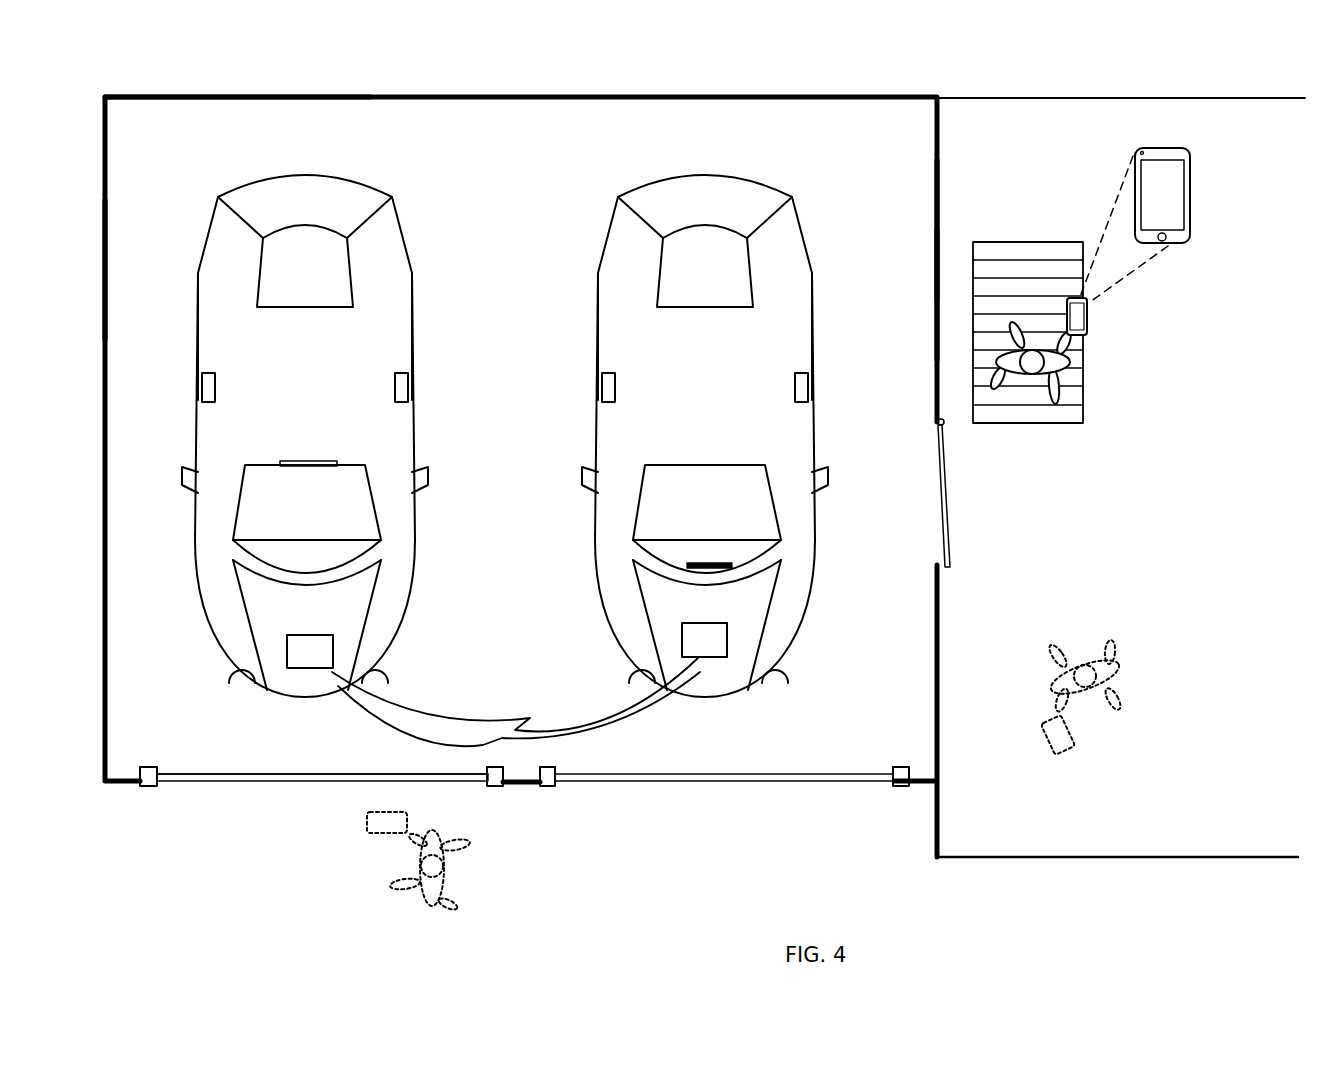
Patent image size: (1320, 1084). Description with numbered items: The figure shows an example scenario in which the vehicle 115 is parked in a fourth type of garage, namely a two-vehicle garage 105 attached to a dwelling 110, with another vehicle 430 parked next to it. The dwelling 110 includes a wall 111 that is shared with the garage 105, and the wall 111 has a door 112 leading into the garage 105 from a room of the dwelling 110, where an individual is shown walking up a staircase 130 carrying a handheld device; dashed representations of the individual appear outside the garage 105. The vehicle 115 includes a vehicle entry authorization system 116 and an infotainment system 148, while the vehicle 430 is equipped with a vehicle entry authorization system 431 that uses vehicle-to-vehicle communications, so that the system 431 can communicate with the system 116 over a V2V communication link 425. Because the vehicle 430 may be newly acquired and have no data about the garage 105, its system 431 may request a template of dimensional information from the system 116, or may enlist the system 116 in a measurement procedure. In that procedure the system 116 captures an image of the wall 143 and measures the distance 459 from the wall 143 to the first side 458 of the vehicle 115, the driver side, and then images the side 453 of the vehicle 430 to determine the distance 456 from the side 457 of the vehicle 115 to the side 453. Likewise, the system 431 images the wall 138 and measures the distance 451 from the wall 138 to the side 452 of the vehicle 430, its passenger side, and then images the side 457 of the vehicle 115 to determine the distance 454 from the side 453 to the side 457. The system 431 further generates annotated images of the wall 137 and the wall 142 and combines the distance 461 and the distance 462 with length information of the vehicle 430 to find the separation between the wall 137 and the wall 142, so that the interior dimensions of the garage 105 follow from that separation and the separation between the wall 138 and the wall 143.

The garage 105 is at (408, 95).
The dwelling 110 is at (1060, 97).
The wall 111 is at (940, 222).
The door 112 is at (948, 535).
The vehicle 115 is at (826, 209).
The vehicle entry authorization system 116 is at (704, 640).
The staircase 130 is at (1044, 436).
The wall 137 is at (238, 102).
The wall 138 is at (110, 266).
The wall 142 is at (218, 771).
The wall 143 is at (934, 296).
The infotainment system 148 is at (705, 560).
The V2V communication link 425 is at (502, 717).
The vehicle 430 is at (418, 205).
The vehicle entry authorization system 431 is at (310, 651).
The distance 451 is at (198, 389).
The side 452 is at (196, 328).
The side 453 is at (415, 310).
The distance 454 is at (597, 389).
The distance 456 is at (597, 425).
The side 457 is at (596, 326).
The first side 458 is at (813, 326).
The distance 459 is at (934, 389).
The distance 461 is at (307, 174).
The distance 462 is at (307, 699).